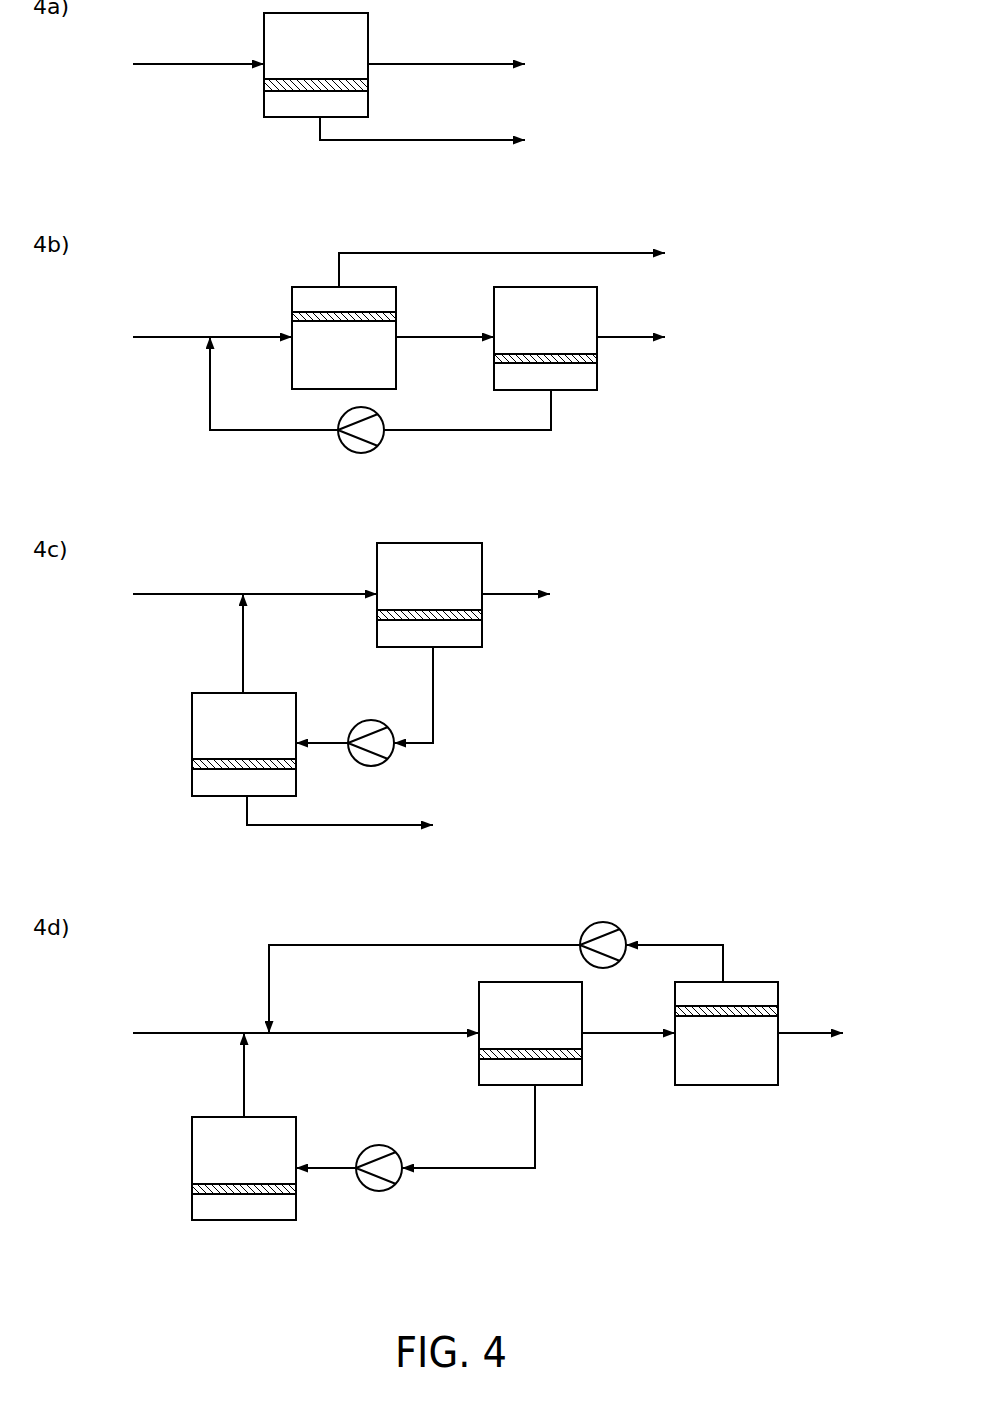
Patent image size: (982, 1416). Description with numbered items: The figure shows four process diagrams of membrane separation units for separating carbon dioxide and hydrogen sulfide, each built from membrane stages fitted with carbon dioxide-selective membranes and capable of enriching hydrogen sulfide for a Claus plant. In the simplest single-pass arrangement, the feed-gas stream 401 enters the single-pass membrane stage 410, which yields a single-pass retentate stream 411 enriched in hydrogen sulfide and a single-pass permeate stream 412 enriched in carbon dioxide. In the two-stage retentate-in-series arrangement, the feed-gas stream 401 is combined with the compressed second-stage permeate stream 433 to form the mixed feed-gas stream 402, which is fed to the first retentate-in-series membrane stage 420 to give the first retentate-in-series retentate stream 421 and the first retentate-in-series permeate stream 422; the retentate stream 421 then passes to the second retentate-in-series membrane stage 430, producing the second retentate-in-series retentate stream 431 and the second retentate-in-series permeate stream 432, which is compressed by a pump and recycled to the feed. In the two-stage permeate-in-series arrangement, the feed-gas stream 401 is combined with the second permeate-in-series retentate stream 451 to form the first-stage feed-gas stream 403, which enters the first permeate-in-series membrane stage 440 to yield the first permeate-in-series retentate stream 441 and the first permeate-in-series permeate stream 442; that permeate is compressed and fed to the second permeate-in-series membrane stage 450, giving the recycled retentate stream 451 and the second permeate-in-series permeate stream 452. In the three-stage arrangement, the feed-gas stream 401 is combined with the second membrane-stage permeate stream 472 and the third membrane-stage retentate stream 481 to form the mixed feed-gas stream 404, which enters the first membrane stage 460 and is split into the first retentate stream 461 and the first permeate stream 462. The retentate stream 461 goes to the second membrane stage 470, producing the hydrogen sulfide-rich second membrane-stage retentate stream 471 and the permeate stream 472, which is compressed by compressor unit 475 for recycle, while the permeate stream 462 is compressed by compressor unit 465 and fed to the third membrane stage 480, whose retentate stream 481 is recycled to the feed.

In FIG. 4a, the feed-gas stream 401 is at (198, 41).
In FIG. 4b, the feed-gas stream 401 is at (171, 313).
In FIG. 4c, the feed-gas stream 401 is at (188, 571).
In FIG. 4d, the feed-gas stream 401 is at (188, 1010).
In FIG. 4b, the mixed feed-gas stream 402 is at (251, 313).
In FIG. 4c, the first-stage feed-gas stream 403 is at (310, 571).
In FIG. 4d, the mixed feed-gas stream 404 is at (361, 1011).
In FIG. 4a, the single-pass membrane stage 410 is at (334, 40).
In FIG. 4a, the single-pass retentate stream 411 is at (446, 41).
In FIG. 4a, the single-pass permeate stream 412 is at (422, 118).
In FIG. 4b, the first retentate-in-series membrane stage 420 is at (362, 382).
In FIG. 4b, the first retentate-in-series retentate stream 421 is at (445, 314).
In FIG. 4b, the first retentate-in-series permeate stream 422 is at (502, 277).
In FIG. 4b, the second retentate-in-series membrane stage 430 is at (563, 316).
In FIG. 4b, the second retentate-in-series retentate stream 431 is at (631, 360).
In FIG. 4b, the second retentate-in-series permeate stream 432 is at (467, 407).
In FIG. 4b, the compressed second-stage permeate stream 433 is at (274, 383).
In FIG. 4c, the first permeate-in-series membrane stage 440 is at (448, 572).
In FIG. 4c, the first permeate-in-series retentate stream 441 is at (516, 571).
In FIG. 4c, the first permeate-in-series permeate stream 442 is at (445, 695).
In FIG. 4c, the second permeate-in-series membrane stage 450 is at (262, 722).
In FIG. 4c, the second permeate-in-series retentate stream 451 is at (217, 643).
In FIG. 4c, the second permeate-in-series permeate stream 452 is at (340, 802).
In FIG. 4d, the first membrane stage 460 is at (548, 1007).
In FIG. 4d, the first retentate stream 461 is at (628, 1010).
In FIG. 4d, the first permeate stream 462 is at (500, 1126).
In FIG. 4d, the compressor unit 465 is at (379, 1146).
In FIG. 4d, the second membrane stage 470 is at (745, 1077).
In FIG. 4d, the second membrane-stage retentate stream 471 is at (810, 1058).
In FIG. 4d, the second membrane-stage permeate stream 472 is at (706, 963).
In FIG. 4d, the compressor unit 475 is at (604, 925).
In FIG. 4d, the third membrane stage 480 is at (262, 1146).
In FIG. 4d, the third membrane-stage retentate stream 481 is at (217, 1075).